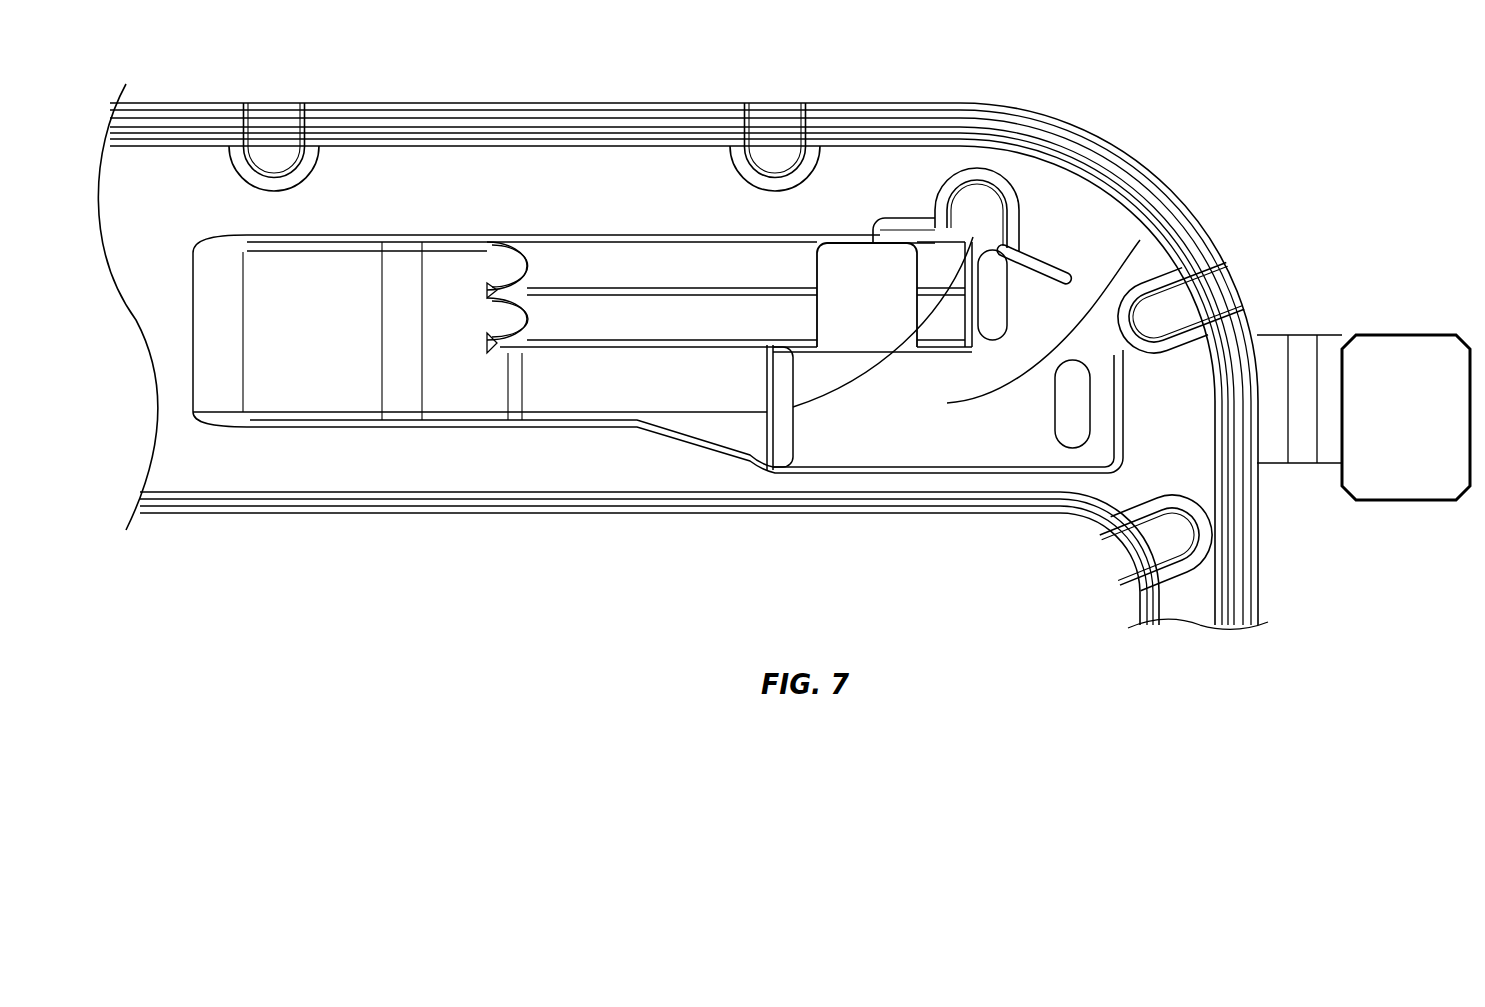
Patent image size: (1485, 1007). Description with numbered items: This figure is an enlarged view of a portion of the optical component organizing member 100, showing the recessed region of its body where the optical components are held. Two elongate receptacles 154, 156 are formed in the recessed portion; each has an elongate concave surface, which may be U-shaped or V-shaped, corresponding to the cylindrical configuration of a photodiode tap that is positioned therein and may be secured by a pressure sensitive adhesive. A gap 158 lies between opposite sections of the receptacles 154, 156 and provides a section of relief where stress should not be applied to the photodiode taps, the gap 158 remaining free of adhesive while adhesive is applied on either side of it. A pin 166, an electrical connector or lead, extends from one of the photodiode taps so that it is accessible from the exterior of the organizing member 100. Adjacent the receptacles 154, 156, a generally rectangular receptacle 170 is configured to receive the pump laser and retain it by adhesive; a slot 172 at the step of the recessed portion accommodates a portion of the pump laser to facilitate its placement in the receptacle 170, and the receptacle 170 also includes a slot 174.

The optical component organizing member 100 is at (1393, 91).
The receptacle 154 is at (583, 265).
The receptacle 156 is at (672, 318).
The gap 158 is at (863, 263).
The pin 166 is at (1035, 270).
The receptacle 170 is at (947, 403).
The slot 172 is at (793, 406).
The slot 174 is at (1196, 264).